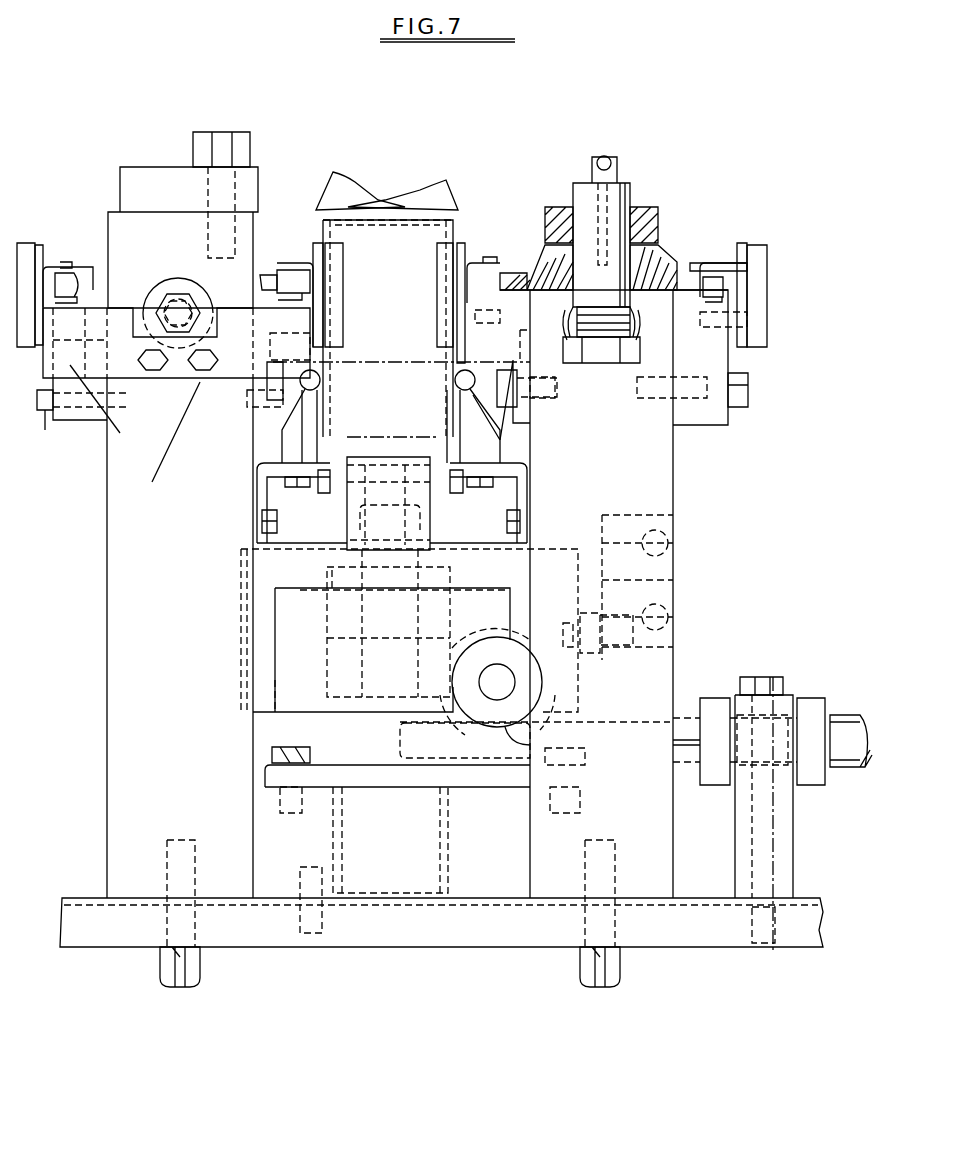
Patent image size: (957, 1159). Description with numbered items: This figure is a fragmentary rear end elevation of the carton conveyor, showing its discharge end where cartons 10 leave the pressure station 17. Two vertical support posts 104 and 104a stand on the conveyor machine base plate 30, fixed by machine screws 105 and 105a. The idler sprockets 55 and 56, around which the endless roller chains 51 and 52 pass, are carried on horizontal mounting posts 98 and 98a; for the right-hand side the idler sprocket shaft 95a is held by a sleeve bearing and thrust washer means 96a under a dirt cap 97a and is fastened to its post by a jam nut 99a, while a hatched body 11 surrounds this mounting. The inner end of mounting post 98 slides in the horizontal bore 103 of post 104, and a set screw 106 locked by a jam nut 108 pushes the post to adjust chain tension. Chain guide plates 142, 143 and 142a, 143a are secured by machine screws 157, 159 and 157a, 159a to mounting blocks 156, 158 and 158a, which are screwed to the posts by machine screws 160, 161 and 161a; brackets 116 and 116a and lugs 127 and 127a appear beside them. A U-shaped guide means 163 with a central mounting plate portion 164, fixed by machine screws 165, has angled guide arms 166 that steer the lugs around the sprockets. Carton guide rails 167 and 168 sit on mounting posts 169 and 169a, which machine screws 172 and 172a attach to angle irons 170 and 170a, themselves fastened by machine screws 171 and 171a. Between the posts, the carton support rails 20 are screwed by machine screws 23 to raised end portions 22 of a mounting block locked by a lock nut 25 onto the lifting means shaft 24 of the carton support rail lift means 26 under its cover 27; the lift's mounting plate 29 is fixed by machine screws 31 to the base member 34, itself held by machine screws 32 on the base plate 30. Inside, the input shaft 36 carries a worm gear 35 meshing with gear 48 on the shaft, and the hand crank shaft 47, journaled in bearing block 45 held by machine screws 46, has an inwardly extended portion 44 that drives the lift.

The carton 10 is at (440, 233).
The hatched collar body 11 is at (678, 218).
The pressure station 17 is at (464, 187).
The carton support rail 20 is at (330, 512).
The raised end portion 22 is at (400, 465).
The machine screw 23 is at (305, 488).
The lifting means shaft 24 is at (340, 540).
The lock nut 25 is at (362, 465).
The carton support rail lift means 26 is at (260, 694).
The cover 27 is at (440, 542).
The mounting plate 29 is at (355, 772).
The conveyor machine base plate 30 is at (515, 940).
The machine screw 31 is at (295, 752).
The machine screw 32 is at (322, 928).
The base member 34 is at (580, 822).
The worm gear 35 is at (543, 627).
The input shaft 36 is at (497, 688).
The inwardly extended portion 44 is at (680, 722).
The bearing block 45 is at (780, 700).
The machine screw 46 is at (762, 680).
The hand crank shaft 47 is at (845, 717).
The gear 48 is at (345, 648).
The endless roller chain 51 is at (77, 268).
The endless roller chain 52 is at (734, 260).
The idler sprocket 55 is at (265, 275).
The idler sprocket 56 is at (689, 278).
The idler sprocket shaft 95a is at (633, 199).
The sleeve bearing and thrust washer means 96a is at (620, 323).
The dirt cap 97a is at (568, 197).
The mounting post 98 is at (161, 288).
The mounting post 98a is at (580, 329).
The jam nut 99a is at (605, 358).
The horizontal bore 103 is at (178, 280).
The vertical support post 104 is at (120, 865).
The vertical support post 104a is at (673, 477).
The machine screw 105 is at (185, 975).
The machine screw 105a is at (598, 983).
The set screw 106 is at (190, 298).
The jam nut 108 is at (205, 306).
The bracket 116 is at (58, 263).
The bracket 116a is at (494, 266).
The lug 127 is at (41, 241).
The lug 127a is at (440, 340).
The chain guide plate 142 is at (316, 298).
The chain guide plate 142a is at (468, 358).
The chain guide plate 143 is at (48, 298).
The chain guide plate 143a is at (735, 352).
The mounting block 156 is at (265, 423).
The machine screw 157 is at (300, 345).
The machine screw 157a is at (455, 323).
The mounting block 158 is at (80, 410).
The mounting block 158a is at (718, 415).
The machine screw 159 is at (110, 322).
The machine screw 159a is at (745, 318).
The machine screw 160 is at (266, 437).
The machine screw 161 is at (76, 428).
The machine screw 161a is at (742, 392).
The U-shaped guide means 163 is at (161, 445).
The central mounting plate portion 164 is at (205, 377).
The machine screw 165 is at (155, 368).
The guide arm 166 is at (113, 417).
The carton guide rail 167 is at (320, 382).
The carton guide rail 168 is at (465, 378).
The mounting post 169 is at (315, 416).
The mounting post 169a is at (500, 440).
The angle iron 170 is at (262, 500).
The angle iron 170a is at (520, 500).
The machine screw 171 is at (262, 528).
The machine screw 171a is at (520, 525).
The machine screw 172 is at (270, 478).
The machine screw 172a is at (527, 470).